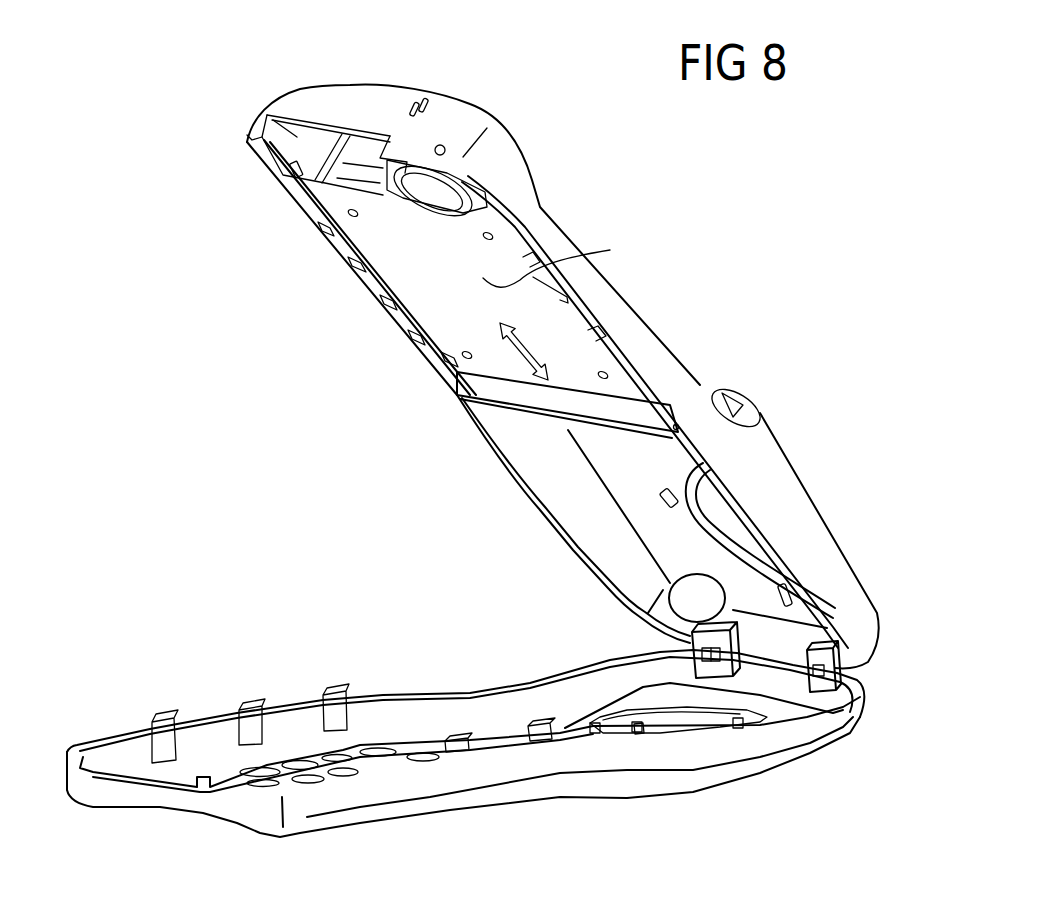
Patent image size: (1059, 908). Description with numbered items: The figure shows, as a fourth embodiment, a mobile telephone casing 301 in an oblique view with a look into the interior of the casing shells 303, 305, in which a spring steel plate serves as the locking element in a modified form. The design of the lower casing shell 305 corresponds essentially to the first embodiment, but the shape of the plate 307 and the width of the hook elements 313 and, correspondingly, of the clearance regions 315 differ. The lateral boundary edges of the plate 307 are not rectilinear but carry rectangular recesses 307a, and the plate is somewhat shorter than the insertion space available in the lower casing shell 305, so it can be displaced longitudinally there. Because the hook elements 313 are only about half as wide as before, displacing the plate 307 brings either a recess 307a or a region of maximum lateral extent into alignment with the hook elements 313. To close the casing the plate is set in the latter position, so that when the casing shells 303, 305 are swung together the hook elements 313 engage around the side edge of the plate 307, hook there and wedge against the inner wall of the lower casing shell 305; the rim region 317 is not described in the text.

The mobile telephone casing 301 is at (773, 291).
The casing shell 303 is at (660, 790).
The lower casing shell 305 is at (771, 442).
The plate 307 is at (572, 262).
The rectangular recesses 307a is at (300, 196).
The hook elements 313 is at (163, 737).
The clearance regions 315 is at (250, 635).
The rim wall 317 is at (337, 243).